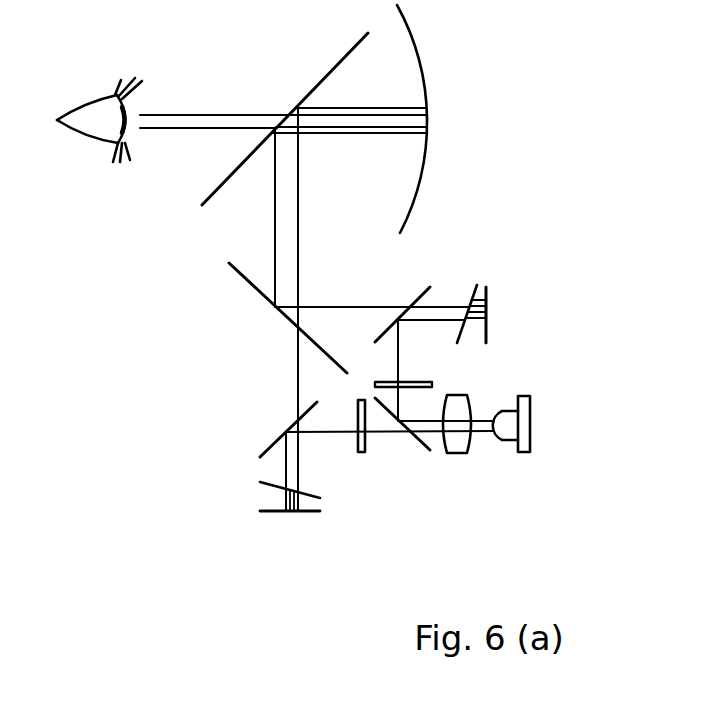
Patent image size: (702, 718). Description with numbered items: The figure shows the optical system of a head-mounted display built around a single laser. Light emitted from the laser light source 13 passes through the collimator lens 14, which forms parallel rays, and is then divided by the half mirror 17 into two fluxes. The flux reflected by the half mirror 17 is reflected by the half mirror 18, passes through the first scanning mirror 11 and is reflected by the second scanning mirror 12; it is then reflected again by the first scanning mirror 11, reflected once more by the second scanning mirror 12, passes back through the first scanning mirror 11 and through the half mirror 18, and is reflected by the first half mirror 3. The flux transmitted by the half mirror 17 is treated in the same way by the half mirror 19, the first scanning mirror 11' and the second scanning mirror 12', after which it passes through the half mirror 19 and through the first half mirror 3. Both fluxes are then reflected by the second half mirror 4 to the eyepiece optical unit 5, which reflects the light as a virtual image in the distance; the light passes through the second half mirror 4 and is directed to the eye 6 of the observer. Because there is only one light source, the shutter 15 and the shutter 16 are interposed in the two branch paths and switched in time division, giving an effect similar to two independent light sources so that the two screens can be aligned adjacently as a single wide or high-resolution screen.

The first half mirror 3 is at (250, 284).
The second half mirror 4 is at (213, 190).
The eyepiece optical unit 5 is at (418, 50).
The eye of the observer 6 is at (128, 112).
The first scanning mirror 11 is at (483, 277).
The first scanning mirror 11' is at (252, 495).
The second scanning mirror 12 is at (527, 315).
The second scanning mirror 12' is at (278, 547).
The laser light source 13 is at (527, 442).
The collimator lens 14 is at (460, 445).
The shutter 15 is at (413, 382).
The shutter 16 is at (367, 455).
The half mirror 17 is at (423, 445).
The half mirror 18 is at (417, 290).
The half mirror 19 is at (272, 442).